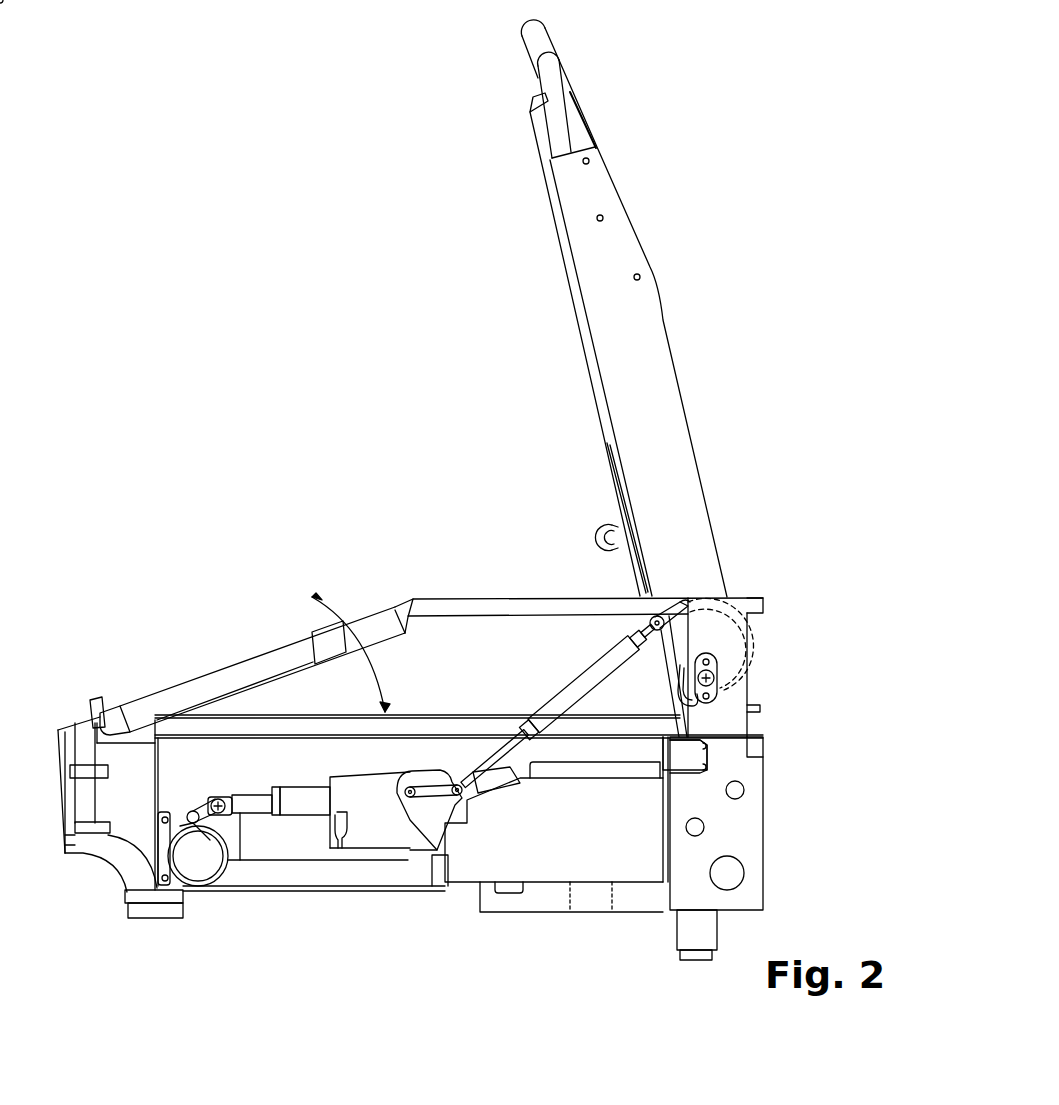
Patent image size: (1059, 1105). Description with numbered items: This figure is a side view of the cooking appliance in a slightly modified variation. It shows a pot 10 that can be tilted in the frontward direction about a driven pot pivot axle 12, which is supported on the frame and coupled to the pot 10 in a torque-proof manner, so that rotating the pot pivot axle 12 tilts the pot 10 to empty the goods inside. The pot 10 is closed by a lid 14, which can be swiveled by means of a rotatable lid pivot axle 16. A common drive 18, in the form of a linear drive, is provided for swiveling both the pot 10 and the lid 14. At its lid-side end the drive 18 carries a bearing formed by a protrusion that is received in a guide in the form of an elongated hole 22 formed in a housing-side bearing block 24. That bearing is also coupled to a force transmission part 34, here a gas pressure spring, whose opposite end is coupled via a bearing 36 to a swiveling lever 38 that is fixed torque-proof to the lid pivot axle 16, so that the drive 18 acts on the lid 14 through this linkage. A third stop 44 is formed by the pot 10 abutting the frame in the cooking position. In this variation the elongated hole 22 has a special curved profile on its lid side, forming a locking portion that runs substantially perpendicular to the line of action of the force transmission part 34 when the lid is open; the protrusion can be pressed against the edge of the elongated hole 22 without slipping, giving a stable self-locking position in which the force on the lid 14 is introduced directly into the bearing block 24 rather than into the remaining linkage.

The pot 10 is at (257, 757).
The pot pivot axle 12 is at (195, 867).
The lid 14 is at (673, 427).
The lid pivot axle 16 is at (707, 687).
The drive 18 is at (370, 840).
The elongated hole 22 is at (430, 800).
The bearing block 24 is at (420, 780).
The force transmission part 34 is at (567, 693).
The bearing 36 is at (677, 607).
The swiveling lever 38 is at (680, 640).
The third stop 44 is at (593, 900).